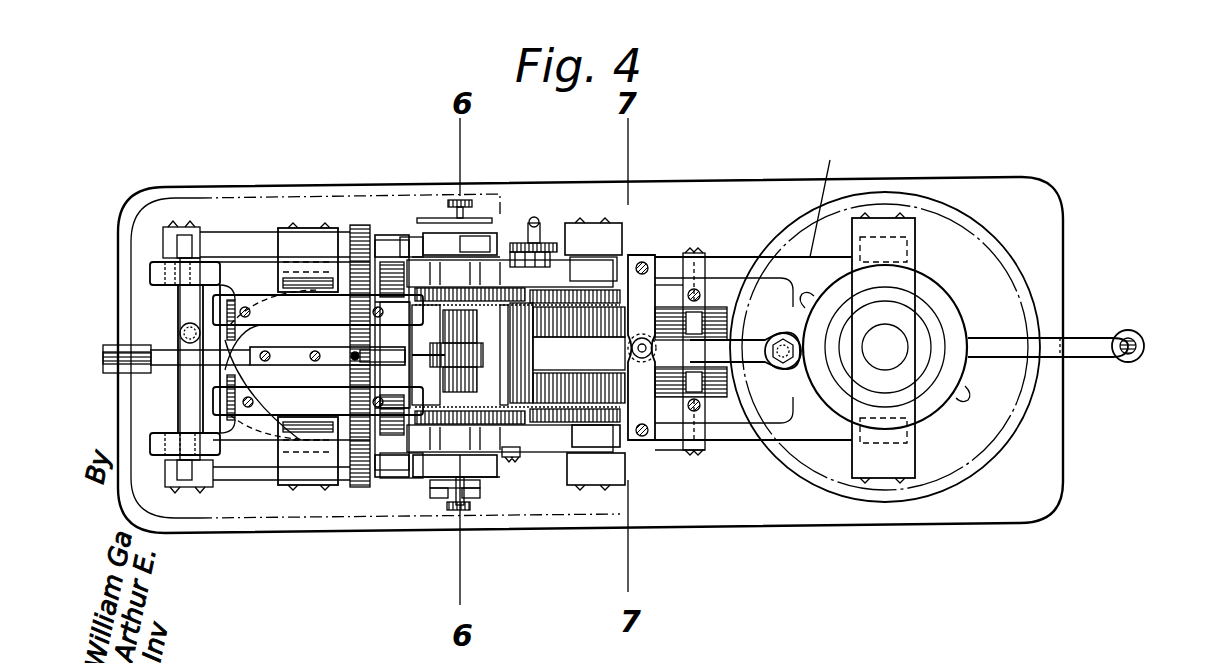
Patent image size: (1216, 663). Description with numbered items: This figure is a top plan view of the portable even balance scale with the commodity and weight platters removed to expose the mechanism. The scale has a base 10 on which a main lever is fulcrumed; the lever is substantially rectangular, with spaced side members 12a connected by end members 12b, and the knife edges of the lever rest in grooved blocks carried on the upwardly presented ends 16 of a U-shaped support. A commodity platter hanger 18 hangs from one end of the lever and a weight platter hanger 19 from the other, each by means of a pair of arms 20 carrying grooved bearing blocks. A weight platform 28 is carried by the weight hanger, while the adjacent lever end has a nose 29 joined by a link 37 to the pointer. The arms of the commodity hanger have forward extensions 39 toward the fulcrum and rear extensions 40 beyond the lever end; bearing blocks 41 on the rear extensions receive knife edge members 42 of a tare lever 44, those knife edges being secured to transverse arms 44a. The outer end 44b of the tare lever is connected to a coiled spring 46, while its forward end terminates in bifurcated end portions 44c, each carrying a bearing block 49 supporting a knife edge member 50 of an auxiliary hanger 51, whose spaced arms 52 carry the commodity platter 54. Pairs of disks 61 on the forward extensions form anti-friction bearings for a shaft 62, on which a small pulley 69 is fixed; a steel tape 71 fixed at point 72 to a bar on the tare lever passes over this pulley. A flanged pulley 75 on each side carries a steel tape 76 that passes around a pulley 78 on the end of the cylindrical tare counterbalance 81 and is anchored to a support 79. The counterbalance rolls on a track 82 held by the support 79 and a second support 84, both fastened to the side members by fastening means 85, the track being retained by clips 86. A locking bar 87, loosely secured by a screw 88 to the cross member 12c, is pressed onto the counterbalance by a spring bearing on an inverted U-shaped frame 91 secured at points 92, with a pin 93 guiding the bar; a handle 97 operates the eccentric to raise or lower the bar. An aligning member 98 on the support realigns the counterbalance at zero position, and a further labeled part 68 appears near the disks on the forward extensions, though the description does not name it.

The base 10 is at (290, 356).
The side members 12a is at (733, 268).
The end members 12b is at (950, 455).
The cross member 12c is at (830, 196).
The upwardly presented ends of support 16 is at (598, 223).
The commodity platter hanger 18 is at (262, 470).
The weight platter hanger 19 is at (920, 305).
The arms 20 is at (300, 240).
The weight platform 28 is at (953, 525).
The extension or nose 29 is at (1095, 370).
The link 37 is at (1131, 330).
The forward extension 39 is at (530, 242).
The rear extension 40 is at (240, 245).
The bearing blocks 41 is at (200, 230).
The knife edge members 42 is at (185, 240).
The auxiliary or tare lever 44 is at (316, 356).
The transverse arms 44a is at (160, 445).
The rear or outer end of tare lever 44b is at (125, 373).
The bifurcated end portions 44c is at (333, 545).
The coiled spring 46 is at (103, 348).
The bearing block 49 is at (392, 262).
The knife edge member 50 is at (365, 250).
The auxiliary hanger 51 is at (392, 355).
The arms 52 is at (318, 365).
The commodity platter 54 is at (290, 195).
The disks 61 is at (495, 222).
The shaft 62 is at (470, 510).
The bearing 68 is at (465, 235).
The small pulley 69 is at (449, 351).
The steel tape 71 is at (428, 355).
The tape fixing point 72 is at (366, 355).
The sheave or flanged pulley 75 is at (513, 356).
The steel tape 76 is at (579, 377).
The pulley 78 is at (512, 455).
The support 79 is at (520, 446).
The cylindrical weight member or tare counterbalance 81 is at (579, 388).
The track 82 is at (691, 362).
The support 84 is at (682, 452).
The fastening means 85 is at (700, 250).
The clips 86 is at (707, 353).
The locking bar 87 is at (579, 353).
The screw 88 is at (797, 340).
The inverted U-shaped frame 91 is at (669, 294).
The frame securing points 92 is at (645, 265).
The pin 93 is at (656, 349).
The handle 97 is at (537, 222).
The stop or aligning member 98 is at (533, 345).